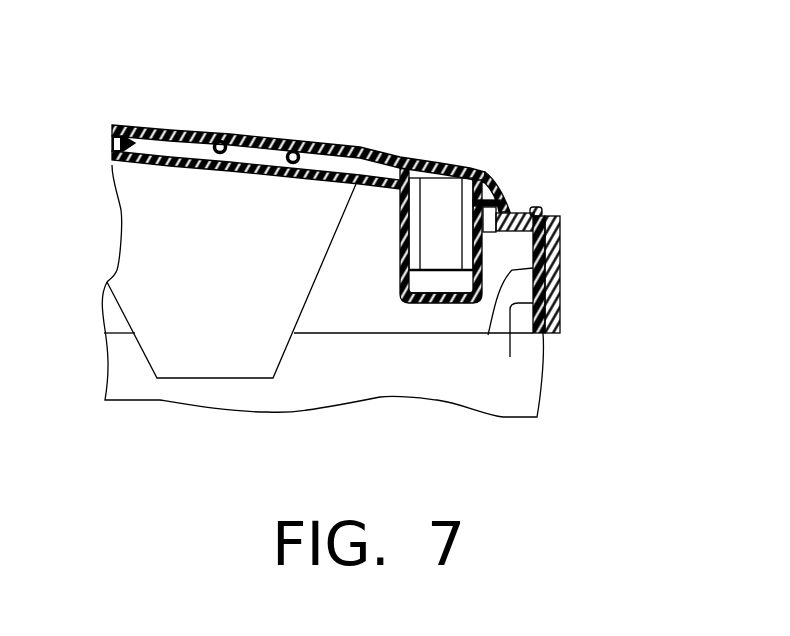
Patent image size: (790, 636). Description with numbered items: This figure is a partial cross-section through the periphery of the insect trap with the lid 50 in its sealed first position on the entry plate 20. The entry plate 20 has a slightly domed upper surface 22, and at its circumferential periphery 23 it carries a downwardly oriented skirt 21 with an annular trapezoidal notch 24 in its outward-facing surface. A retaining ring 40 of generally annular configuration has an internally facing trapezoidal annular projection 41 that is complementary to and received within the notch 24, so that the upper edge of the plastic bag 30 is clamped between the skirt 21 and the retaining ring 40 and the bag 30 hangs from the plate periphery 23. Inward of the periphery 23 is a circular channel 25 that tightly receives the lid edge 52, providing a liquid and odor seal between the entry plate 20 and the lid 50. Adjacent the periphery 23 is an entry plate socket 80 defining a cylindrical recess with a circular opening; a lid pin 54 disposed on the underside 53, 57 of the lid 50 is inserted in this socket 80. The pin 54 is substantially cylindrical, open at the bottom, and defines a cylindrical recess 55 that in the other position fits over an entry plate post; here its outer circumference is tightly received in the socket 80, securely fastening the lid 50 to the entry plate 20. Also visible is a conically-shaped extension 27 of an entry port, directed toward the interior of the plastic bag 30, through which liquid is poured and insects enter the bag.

The entry plate 20 is at (316, 160).
The upper surface of entry plate 22 is at (168, 133).
The underside of lid 53 is at (221, 136).
The lid 50 is at (248, 138).
The underside of lid 57 is at (307, 140).
The lid pin 54 is at (396, 162).
The cylindrical recess of lid pin 55 is at (439, 190).
The lid edge 52 is at (508, 207).
The channel 25 is at (523, 197).
The entry plate periphery 23 is at (541, 212).
The retaining ring 40 is at (558, 222).
The trapezoidal annular projection 41 is at (558, 273).
The entry plate socket 80 is at (424, 279).
The annular trapezoidal notch 24 is at (488, 335).
The skirt 21 is at (512, 349).
The plastic bag 30 is at (374, 311).
The conically-shaped extension 27 is at (313, 292).